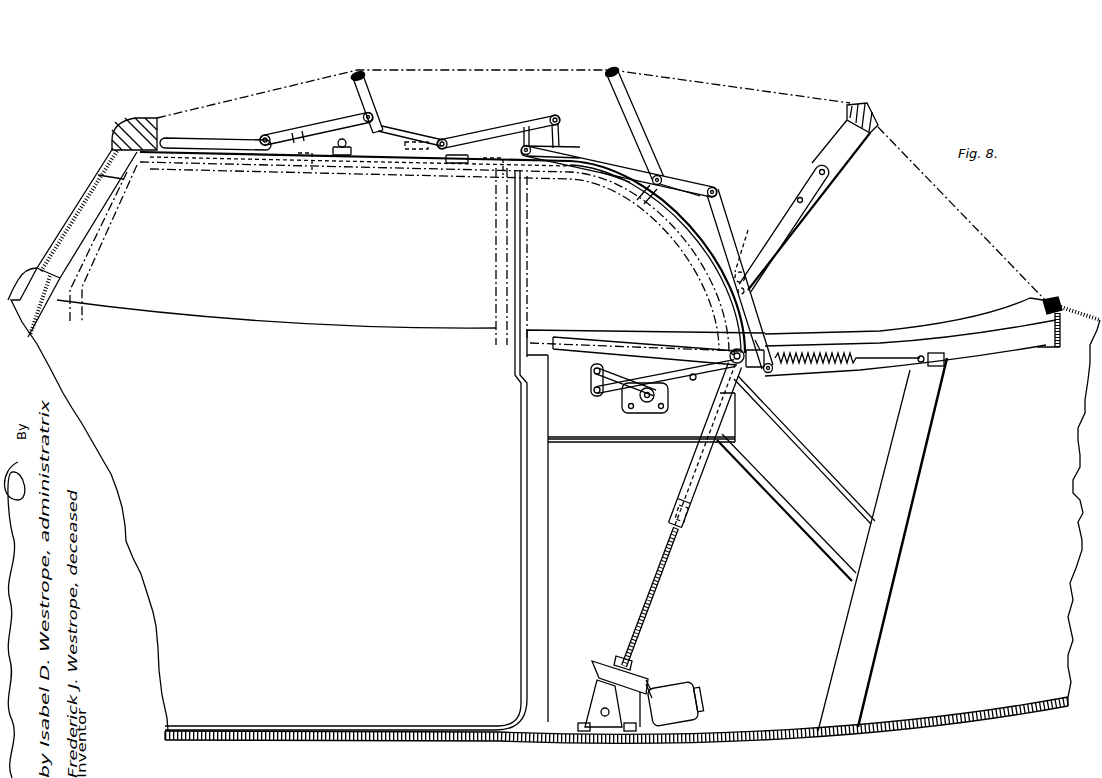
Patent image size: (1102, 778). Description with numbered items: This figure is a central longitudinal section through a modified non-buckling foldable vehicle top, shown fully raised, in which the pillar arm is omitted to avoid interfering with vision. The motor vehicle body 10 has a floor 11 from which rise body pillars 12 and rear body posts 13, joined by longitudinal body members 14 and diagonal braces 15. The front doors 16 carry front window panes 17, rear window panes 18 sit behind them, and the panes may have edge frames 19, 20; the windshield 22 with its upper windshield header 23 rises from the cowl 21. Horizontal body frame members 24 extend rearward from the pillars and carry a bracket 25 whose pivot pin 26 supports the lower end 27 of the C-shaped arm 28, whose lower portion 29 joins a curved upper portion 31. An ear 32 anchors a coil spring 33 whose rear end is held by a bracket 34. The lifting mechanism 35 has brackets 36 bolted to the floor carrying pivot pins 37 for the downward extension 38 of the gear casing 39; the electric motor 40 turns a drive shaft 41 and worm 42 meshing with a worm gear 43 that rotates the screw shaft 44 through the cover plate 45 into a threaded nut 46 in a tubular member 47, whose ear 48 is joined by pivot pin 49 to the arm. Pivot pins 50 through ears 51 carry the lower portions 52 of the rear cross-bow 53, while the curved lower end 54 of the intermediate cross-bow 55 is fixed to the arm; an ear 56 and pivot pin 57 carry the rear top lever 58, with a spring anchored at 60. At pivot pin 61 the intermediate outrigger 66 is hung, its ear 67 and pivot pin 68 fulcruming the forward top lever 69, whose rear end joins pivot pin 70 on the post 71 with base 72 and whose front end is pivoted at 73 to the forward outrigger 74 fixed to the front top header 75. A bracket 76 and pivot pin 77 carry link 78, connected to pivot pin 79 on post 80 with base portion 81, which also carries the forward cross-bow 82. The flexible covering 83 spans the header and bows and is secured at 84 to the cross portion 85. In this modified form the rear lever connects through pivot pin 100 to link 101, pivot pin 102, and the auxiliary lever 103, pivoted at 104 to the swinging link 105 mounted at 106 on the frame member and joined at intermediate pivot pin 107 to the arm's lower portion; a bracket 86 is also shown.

The motor vehicle body 10 is at (631, 331).
The floor 11 is at (494, 735).
The body pillars 12 is at (547, 555).
The rear body posts 13 is at (904, 529).
The longitudinal body members 14 is at (880, 333).
The diagonal braces 15 is at (812, 520).
The front doors 16 is at (284, 320).
The front window panes 17 is at (299, 240).
The rear window panes 18 is at (595, 262).
The edge frames 19 is at (107, 237).
The edge frames 20 is at (615, 185).
The cowl 21 is at (33, 281).
The windshield 22 is at (73, 211).
The upper windshield header 23 is at (102, 168).
The horizontal body frame members 24 is at (681, 480).
The bracket 25 is at (627, 410).
The pivot pin or shaft 26 is at (645, 402).
The lower end of C-shaped arm 27 is at (660, 410).
The C-shaped arm 28 is at (753, 346).
The lower portion of C-shaped arm 29 is at (692, 381).
The curved upper portion 31 is at (697, 238).
The ear 32 is at (762, 342).
The coil spring 33 is at (820, 365).
The bracket 34 is at (933, 348).
The power-operated lifting mechanism 35 is at (648, 682).
The brackets 36 is at (590, 725).
The pivot pins or shafts 37 is at (598, 705).
The downward extension 38 is at (598, 688).
The gear casing 39 is at (595, 666).
The electric motor 40 is at (683, 690).
The drive shaft 41 is at (655, 680).
The worm 42 is at (610, 712).
The worm gear 43 is at (614, 662).
The screw shaft 44 is at (662, 562).
The gear casing cover plate 45 is at (648, 675).
The threaded nut 46 is at (690, 510).
The tubular member 47 is at (697, 487).
The ear 48 is at (712, 352).
The pivot pin 49 is at (730, 350).
The pivot pins 50 is at (747, 277).
The ears 51 is at (746, 291).
The lower portions of rear top cross-bow 52 is at (777, 234).
The rear top cross-bow 53 is at (835, 177).
The curved lower end of intermediate cross-bow 54 is at (690, 185).
The intermediate top cross-bow 55 is at (628, 110).
The ear 56 is at (656, 174).
The pivot pin 57 is at (648, 192).
The rear top lever 58 is at (610, 162).
The spring anchorage 60 is at (747, 246).
The pivot pin 61 is at (528, 125).
The intermediate outrigger 66 is at (460, 165).
The ear 67 is at (441, 138).
The pivot pin 68 is at (448, 140).
The forward top lever 69 is at (500, 131).
The pivot pin 70 is at (555, 114).
The upwardly extending post 71 is at (560, 134).
The base of post 72 is at (582, 150).
The pivot connection 73 is at (341, 156).
The forward outrigger 74 is at (236, 156).
The front top header 75 is at (125, 140).
The bracket 76 is at (257, 142).
The pivot pin 77 is at (265, 134).
The link 78 is at (320, 128).
The pivot pin 79 is at (374, 117).
The post 80 is at (382, 128).
The base portion of post 81 is at (416, 138).
The forward top cross-bow 82 is at (370, 95).
The flexible top covering 83 is at (242, 100).
The covering attachment 84 is at (1050, 303).
The cross portion 85 is at (1062, 342).
The bracket 86 is at (307, 171).
The pivot pin 100 is at (714, 187).
The link 101 is at (722, 210).
The pivot pin 102 is at (771, 373).
The auxiliary lever 103 is at (598, 440).
The pivot 104 is at (600, 393).
The swinging link 105 is at (594, 390).
The pivot mounting 106 is at (594, 371).
The intermediate pivot pin 107 is at (733, 353).